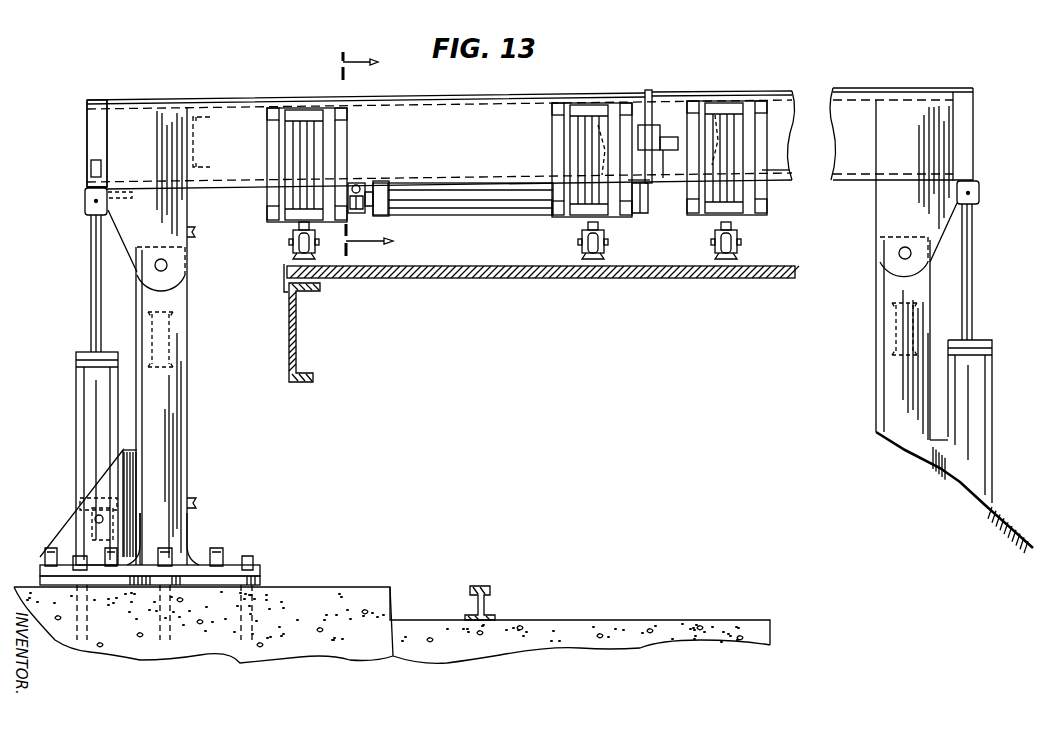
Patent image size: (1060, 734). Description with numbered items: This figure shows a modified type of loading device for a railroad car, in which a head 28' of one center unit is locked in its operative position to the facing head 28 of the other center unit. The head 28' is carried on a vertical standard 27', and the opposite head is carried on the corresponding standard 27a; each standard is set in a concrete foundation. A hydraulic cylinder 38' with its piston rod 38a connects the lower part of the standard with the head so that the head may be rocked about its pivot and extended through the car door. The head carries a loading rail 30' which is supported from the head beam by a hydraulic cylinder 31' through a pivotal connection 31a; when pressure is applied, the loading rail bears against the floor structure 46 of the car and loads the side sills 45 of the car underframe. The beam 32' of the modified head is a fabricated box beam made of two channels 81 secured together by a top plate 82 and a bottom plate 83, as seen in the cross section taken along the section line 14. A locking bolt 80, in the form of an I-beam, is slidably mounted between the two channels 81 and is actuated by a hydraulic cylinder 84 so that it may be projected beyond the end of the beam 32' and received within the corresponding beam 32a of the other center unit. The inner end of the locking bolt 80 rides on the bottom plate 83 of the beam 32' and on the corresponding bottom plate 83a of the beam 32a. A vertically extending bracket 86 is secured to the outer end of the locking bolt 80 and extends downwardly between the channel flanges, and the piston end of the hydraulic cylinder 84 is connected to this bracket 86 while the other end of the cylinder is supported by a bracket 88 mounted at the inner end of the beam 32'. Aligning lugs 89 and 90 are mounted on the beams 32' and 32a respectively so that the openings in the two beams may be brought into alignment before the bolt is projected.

The section line 14- 14 is at (355, 151).
The standard 27' is at (178, 336).
The standard of the other center unit 27a is at (882, 408).
The head 28 is at (943, 146).
The head of modified loading device 28' is at (103, 109).
The loading rail 30' is at (280, 248).
The hydraulic cylinder 31' is at (322, 165).
The pivotal connection 31a is at (735, 136).
The beam 32' is at (89, 186).
The beam of the other center unit 32a is at (971, 118).
The hydraulic cylinder 38' is at (74, 362).
The piston rod 38a is at (993, 396).
The side sill 45 is at (297, 347).
The floor structure 46 is at (388, 280).
The locking bolt 80 is at (654, 92).
The channel 81 is at (520, 138).
The top plate 82 is at (213, 97).
The bottom plate 83 is at (393, 183).
The bottom plate of beam 32a 83a is at (773, 178).
The hydraulic cylinder 84 is at (433, 209).
The bracket 86 is at (353, 214).
The bracket 88 is at (641, 207).
The aligning lug 89 is at (644, 124).
The aligning lug 90 is at (663, 152).